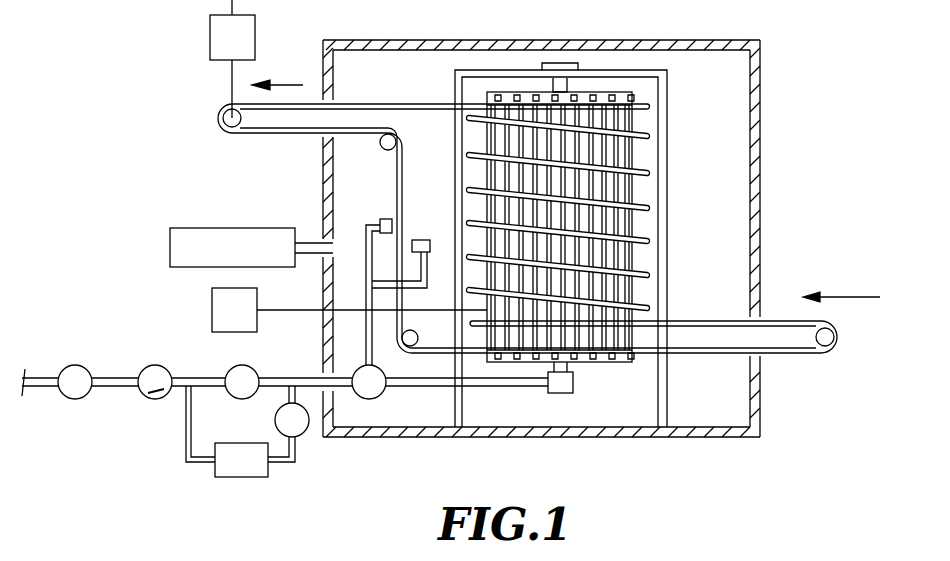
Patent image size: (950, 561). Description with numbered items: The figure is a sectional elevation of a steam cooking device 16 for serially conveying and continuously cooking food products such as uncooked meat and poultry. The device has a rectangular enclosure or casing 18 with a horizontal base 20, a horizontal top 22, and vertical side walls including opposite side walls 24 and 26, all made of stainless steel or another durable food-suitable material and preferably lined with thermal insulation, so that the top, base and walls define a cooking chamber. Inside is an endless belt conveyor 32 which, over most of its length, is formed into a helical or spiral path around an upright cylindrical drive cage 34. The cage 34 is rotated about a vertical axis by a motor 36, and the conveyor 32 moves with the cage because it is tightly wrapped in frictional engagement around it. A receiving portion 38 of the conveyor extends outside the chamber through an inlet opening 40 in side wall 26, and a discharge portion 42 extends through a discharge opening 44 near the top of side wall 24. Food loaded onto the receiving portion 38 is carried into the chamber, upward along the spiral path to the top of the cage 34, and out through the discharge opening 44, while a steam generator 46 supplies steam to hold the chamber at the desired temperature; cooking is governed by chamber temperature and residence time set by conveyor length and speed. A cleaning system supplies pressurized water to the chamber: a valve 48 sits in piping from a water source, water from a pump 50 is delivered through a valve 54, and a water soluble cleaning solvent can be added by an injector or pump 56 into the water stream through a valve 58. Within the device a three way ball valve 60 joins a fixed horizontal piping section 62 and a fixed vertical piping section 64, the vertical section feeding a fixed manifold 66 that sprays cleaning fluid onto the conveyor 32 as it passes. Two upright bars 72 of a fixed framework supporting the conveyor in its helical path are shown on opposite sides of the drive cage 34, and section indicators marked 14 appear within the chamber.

The section line indicators 14 is at (394, 208).
The steam cooking device 16 is at (147, 100).
The enclosure or casing 18 is at (412, 40).
The horizontal base 20 is at (710, 437).
The horizontal top 22 is at (546, 237).
The side wall 24 is at (323, 156).
The side wall 26 is at (760, 179).
The endless belt conveyor 32 is at (633, 170).
The upright cylindrical drive cage 34 is at (633, 230).
The motor 36 is at (212, 309).
The receiving portion 38 is at (780, 320).
The inlet opening 40 is at (757, 353).
The discharge portion 42 is at (222, 108).
The discharge opening 44 is at (337, 100).
The steam generator 46 is at (219, 228).
The valve 48 is at (74, 365).
The pump 50 is at (158, 365).
The valve 54 is at (244, 366).
The injector or pump 56 is at (243, 478).
The valve 58 is at (303, 433).
The three way ball valve 60 is at (381, 389).
The fixed horizontal piping section 62 is at (513, 388).
The fixed vertical piping section 64 is at (366, 341).
The fixed manifold 66 is at (393, 204).
The upright bar 72 is at (668, 97).